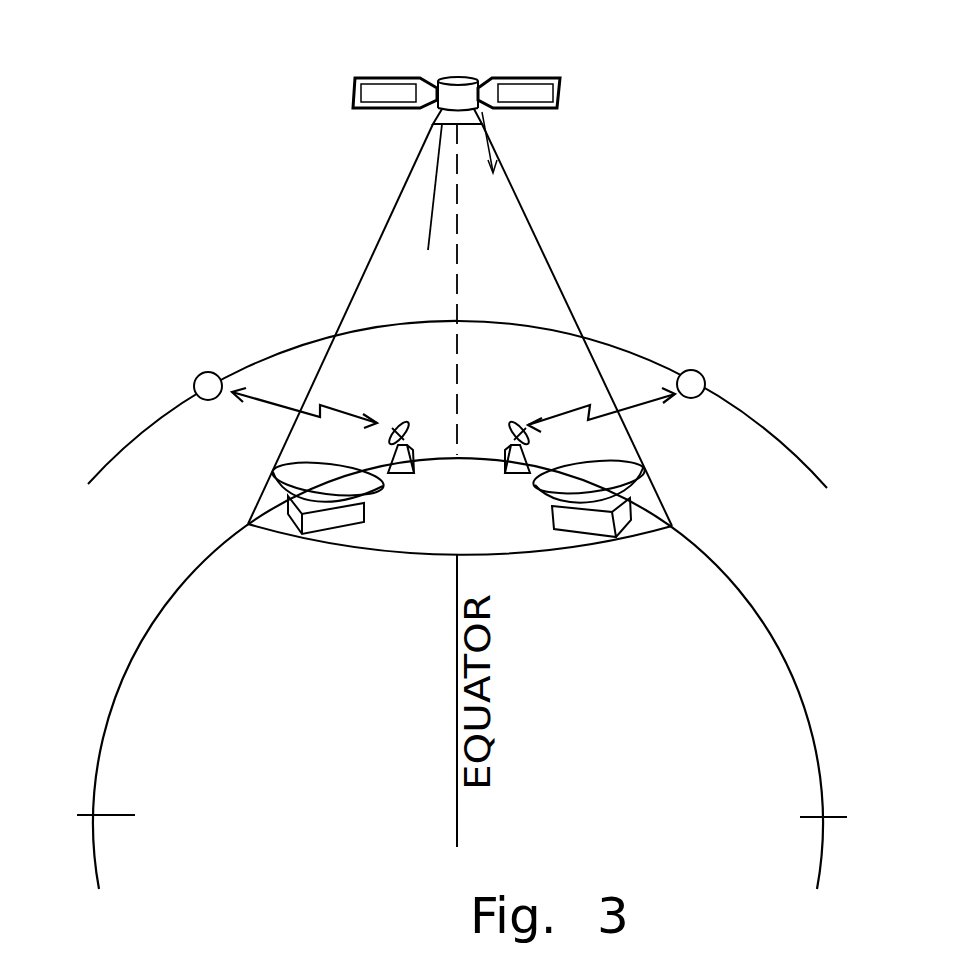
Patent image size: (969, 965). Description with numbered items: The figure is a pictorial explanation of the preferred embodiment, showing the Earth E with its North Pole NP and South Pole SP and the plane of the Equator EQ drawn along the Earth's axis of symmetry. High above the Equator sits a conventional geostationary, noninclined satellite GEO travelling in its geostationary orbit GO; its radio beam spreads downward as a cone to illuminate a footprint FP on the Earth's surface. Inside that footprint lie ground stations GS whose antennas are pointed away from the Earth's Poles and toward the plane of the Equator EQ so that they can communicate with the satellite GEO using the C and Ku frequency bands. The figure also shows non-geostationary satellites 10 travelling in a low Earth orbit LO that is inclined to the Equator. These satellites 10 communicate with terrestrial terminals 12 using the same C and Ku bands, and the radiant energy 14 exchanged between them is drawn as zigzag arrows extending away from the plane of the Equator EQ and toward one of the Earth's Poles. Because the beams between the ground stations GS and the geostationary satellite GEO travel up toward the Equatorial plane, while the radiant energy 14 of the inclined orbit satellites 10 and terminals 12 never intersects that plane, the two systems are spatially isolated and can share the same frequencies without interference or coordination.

The satellite in inclined orbit 10 is at (194, 380).
The terrestrial terminal 12 is at (402, 480).
The radiant energy 14 is at (262, 405).
The satellite in Equatorial orbit GEO is at (460, 78).
The geostationary orbit GO is at (437, 157).
The low Earth orbit LO is at (304, 342).
The ground station GS is at (290, 532).
The footprint of satellite in geostationary orbit FP is at (418, 557).
The Earth E is at (778, 650).
The South Pole SP is at (88, 803).
The North Pole NP is at (834, 803).
The plane of the Equator EQ is at (478, 289).